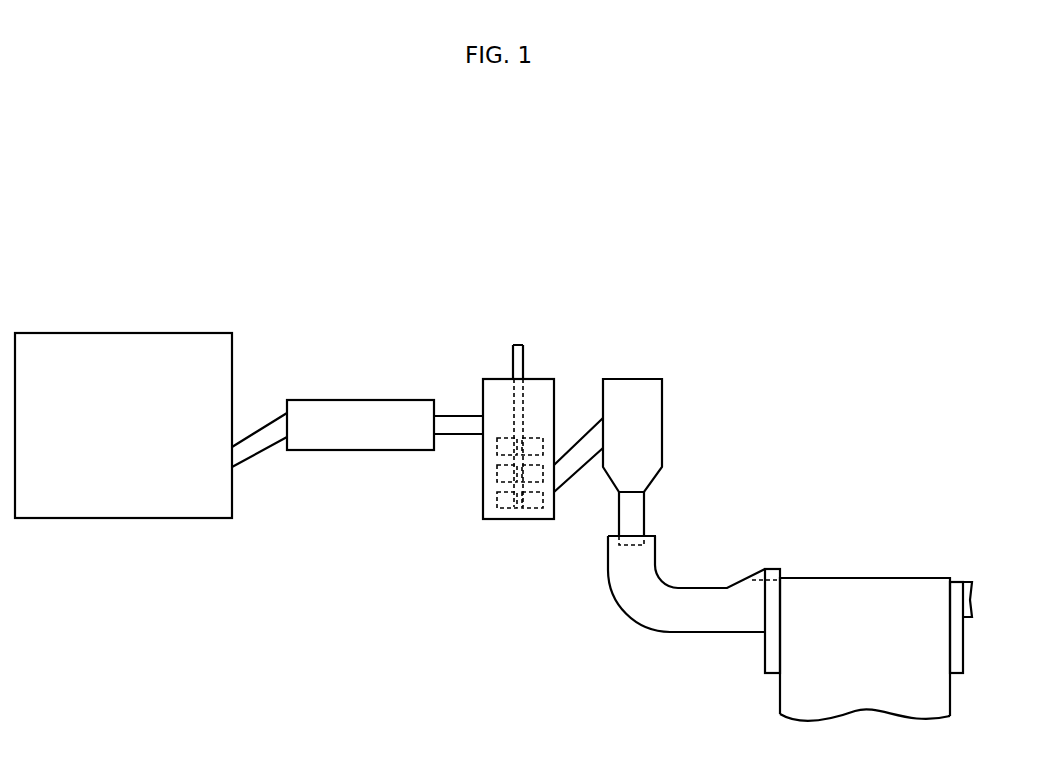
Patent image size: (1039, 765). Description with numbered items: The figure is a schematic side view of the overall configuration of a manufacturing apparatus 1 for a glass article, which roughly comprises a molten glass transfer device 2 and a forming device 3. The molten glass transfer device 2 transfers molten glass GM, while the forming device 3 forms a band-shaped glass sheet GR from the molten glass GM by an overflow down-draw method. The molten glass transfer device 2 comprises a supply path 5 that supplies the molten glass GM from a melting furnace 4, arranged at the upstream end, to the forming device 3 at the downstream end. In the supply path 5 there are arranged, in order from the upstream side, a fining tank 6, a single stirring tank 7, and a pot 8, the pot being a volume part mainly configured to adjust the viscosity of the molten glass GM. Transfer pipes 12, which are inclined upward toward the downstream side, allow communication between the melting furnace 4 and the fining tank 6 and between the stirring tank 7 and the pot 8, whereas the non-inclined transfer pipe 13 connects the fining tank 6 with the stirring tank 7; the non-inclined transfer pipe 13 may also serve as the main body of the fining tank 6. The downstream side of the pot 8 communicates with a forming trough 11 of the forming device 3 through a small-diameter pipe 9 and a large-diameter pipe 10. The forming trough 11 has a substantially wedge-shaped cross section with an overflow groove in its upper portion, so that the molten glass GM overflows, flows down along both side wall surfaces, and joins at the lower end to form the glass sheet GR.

The manufacturing apparatus 1 is at (641, 198).
The molten glass transfer device 2 is at (301, 300).
The forming device 3 is at (879, 438).
The melting furnace 4 is at (130, 352).
The supply path 5 is at (434, 328).
The fining tank 6 is at (358, 410).
The stirring tank 7 is at (538, 378).
The pot 8 is at (650, 411).
The small-diameter pipe 9 is at (635, 513).
The large-diameter pipe 10 is at (702, 620).
The forming trough 11 is at (957, 642).
The transfer pipe 12 is at (263, 440).
The transfer pipe 13 is at (460, 420).
The molten glass GM is at (870, 592).
The glass sheet GR is at (953, 696).